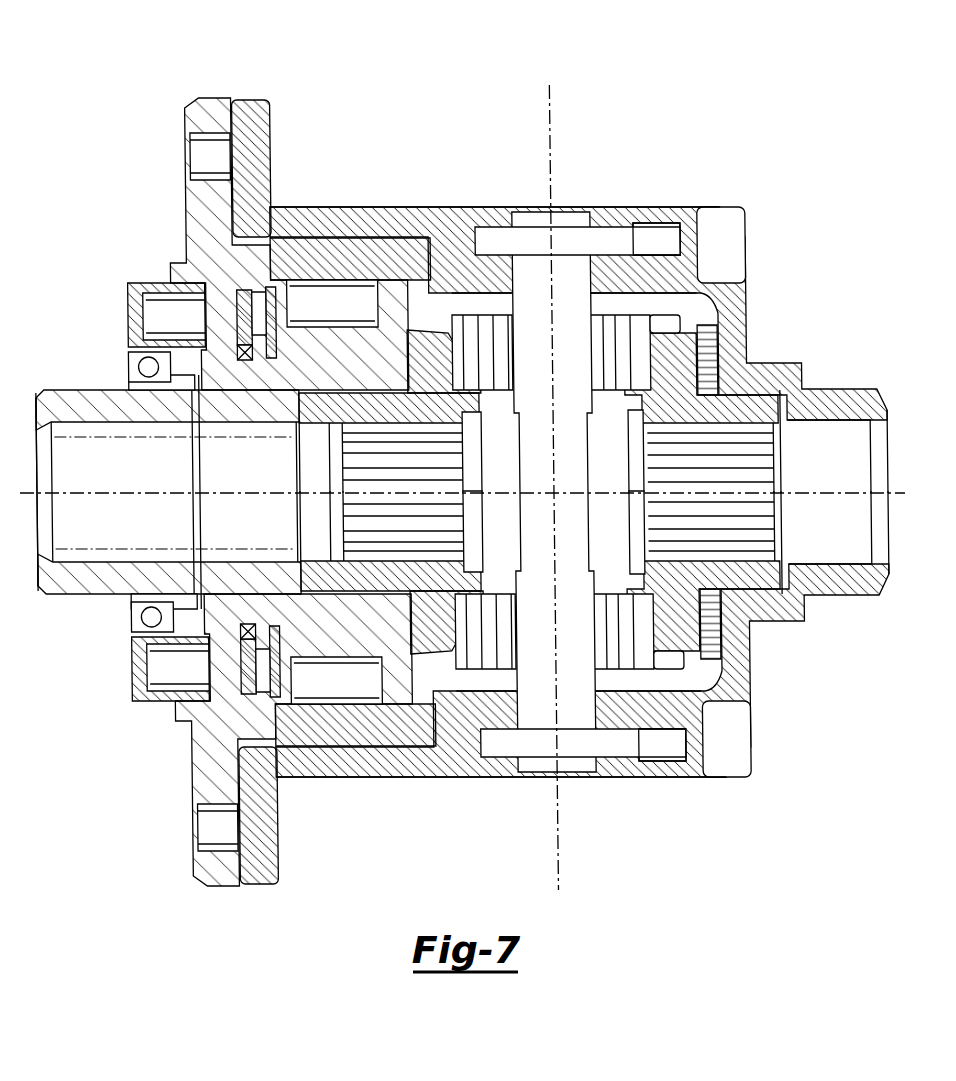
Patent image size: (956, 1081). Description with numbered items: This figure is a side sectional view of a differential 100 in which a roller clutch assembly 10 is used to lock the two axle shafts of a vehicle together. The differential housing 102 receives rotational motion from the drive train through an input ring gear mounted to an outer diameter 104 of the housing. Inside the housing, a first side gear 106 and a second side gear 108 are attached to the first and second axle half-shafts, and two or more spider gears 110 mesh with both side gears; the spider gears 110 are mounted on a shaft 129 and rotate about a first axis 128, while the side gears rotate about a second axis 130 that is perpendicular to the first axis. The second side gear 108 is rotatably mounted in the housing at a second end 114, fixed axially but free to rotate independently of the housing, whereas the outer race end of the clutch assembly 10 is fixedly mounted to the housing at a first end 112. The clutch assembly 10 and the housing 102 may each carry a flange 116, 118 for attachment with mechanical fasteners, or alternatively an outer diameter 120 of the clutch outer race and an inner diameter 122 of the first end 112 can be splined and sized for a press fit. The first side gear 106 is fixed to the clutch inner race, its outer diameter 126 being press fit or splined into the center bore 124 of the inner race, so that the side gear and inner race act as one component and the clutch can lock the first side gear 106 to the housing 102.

The clutch assembly 10 is at (343, 248).
The differential 100 is at (603, 832).
The differential housing 102 is at (738, 300).
The outer diameter of the housing 104 is at (450, 207).
The first side gear 106 is at (427, 650).
The second side gear 108 is at (678, 622).
The spider gears 110 is at (628, 320).
The first end 112 is at (247, 143).
The second end 114 is at (827, 402).
The flange 116 is at (190, 112).
The flange 118 is at (247, 100).
The outer diameter of the outer race 120 is at (390, 242).
The inner diameter of the first end 122 is at (268, 243).
The center bore 124 is at (313, 507).
The outer diameter of the first side gear 126 is at (343, 395).
The first axis 128 is at (553, 187).
The shaft 129 is at (542, 763).
The second axis 130 is at (905, 493).